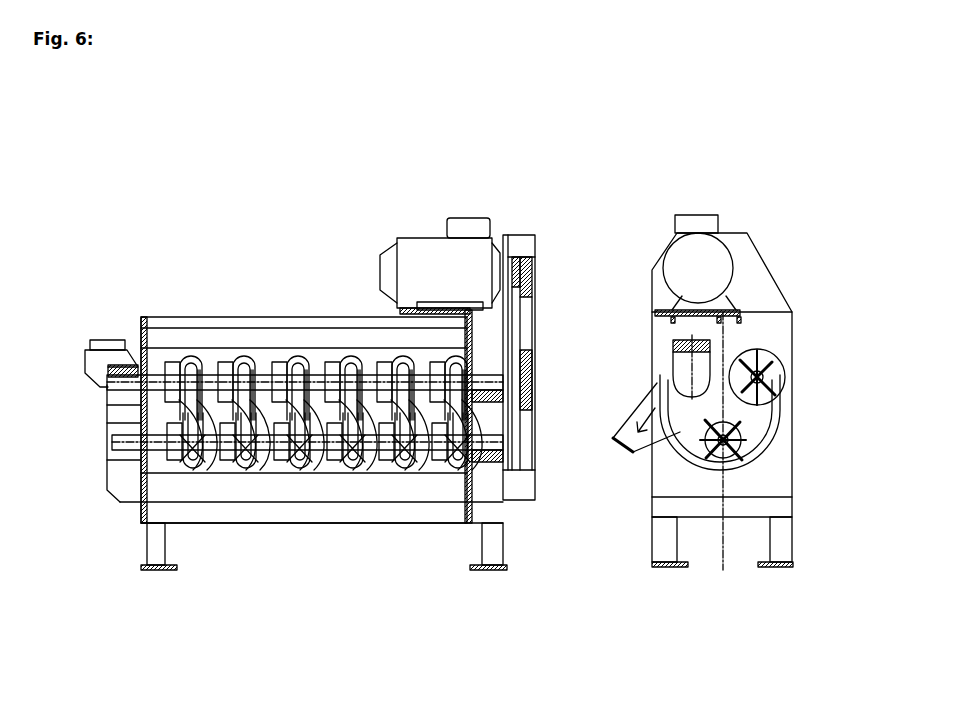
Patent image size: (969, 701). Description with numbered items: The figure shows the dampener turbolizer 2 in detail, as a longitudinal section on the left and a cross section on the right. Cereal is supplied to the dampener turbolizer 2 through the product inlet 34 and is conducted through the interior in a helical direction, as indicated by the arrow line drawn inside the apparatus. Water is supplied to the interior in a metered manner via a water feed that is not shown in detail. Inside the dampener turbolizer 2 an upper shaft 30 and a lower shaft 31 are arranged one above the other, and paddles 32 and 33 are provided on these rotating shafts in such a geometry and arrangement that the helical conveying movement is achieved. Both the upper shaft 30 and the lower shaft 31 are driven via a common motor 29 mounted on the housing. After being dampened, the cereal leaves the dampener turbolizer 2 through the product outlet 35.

The dampener turbolizer 2 is at (212, 155).
The motor 29 is at (416, 237).
The upper shaft 30 is at (262, 367).
The lower shaft 31 is at (312, 470).
The paddles 32 is at (224, 377).
The paddles 33 is at (230, 475).
The product inlet 34 is at (105, 338).
The product outlet 35 is at (617, 445).